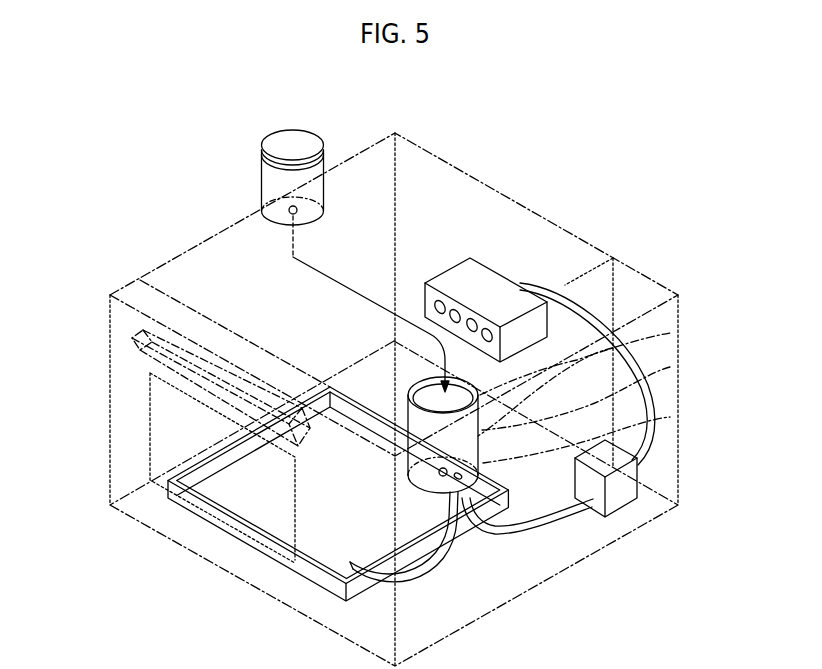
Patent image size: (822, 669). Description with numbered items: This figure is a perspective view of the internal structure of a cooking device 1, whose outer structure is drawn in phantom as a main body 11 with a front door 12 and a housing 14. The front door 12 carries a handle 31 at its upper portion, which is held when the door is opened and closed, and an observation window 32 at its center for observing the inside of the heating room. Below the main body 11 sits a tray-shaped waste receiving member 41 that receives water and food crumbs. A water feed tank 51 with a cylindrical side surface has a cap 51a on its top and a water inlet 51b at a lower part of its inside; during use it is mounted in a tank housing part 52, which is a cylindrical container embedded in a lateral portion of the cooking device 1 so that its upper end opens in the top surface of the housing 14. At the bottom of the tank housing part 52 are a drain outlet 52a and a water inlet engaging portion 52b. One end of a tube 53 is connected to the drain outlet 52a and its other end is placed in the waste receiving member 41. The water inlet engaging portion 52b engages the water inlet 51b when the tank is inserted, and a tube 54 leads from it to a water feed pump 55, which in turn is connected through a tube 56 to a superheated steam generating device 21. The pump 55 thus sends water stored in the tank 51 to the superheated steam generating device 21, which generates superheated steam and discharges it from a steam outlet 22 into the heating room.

The cooking device 1 is at (625, 130).
The main body 11 is at (210, 238).
The front door 12 is at (107, 478).
The housing 14 is at (653, 279).
The superheated steam generating device 21 is at (502, 278).
The steam outlet 22 is at (459, 300).
The handle 31 is at (113, 337).
The observation window 32 is at (147, 428).
The waste receiving member 41 is at (230, 531).
The water feed tank 51 is at (262, 166).
The cap 51a is at (291, 145).
The water inlet 51b is at (263, 204).
The tank housing part 52 is at (613, 348).
The drain outlet 52a is at (500, 528).
The water inlet engaging portion 52b is at (627, 373).
The tube 53 is at (443, 560).
The tube 54 is at (550, 528).
The water feed pump 55 is at (640, 490).
The tube 56 is at (664, 421).